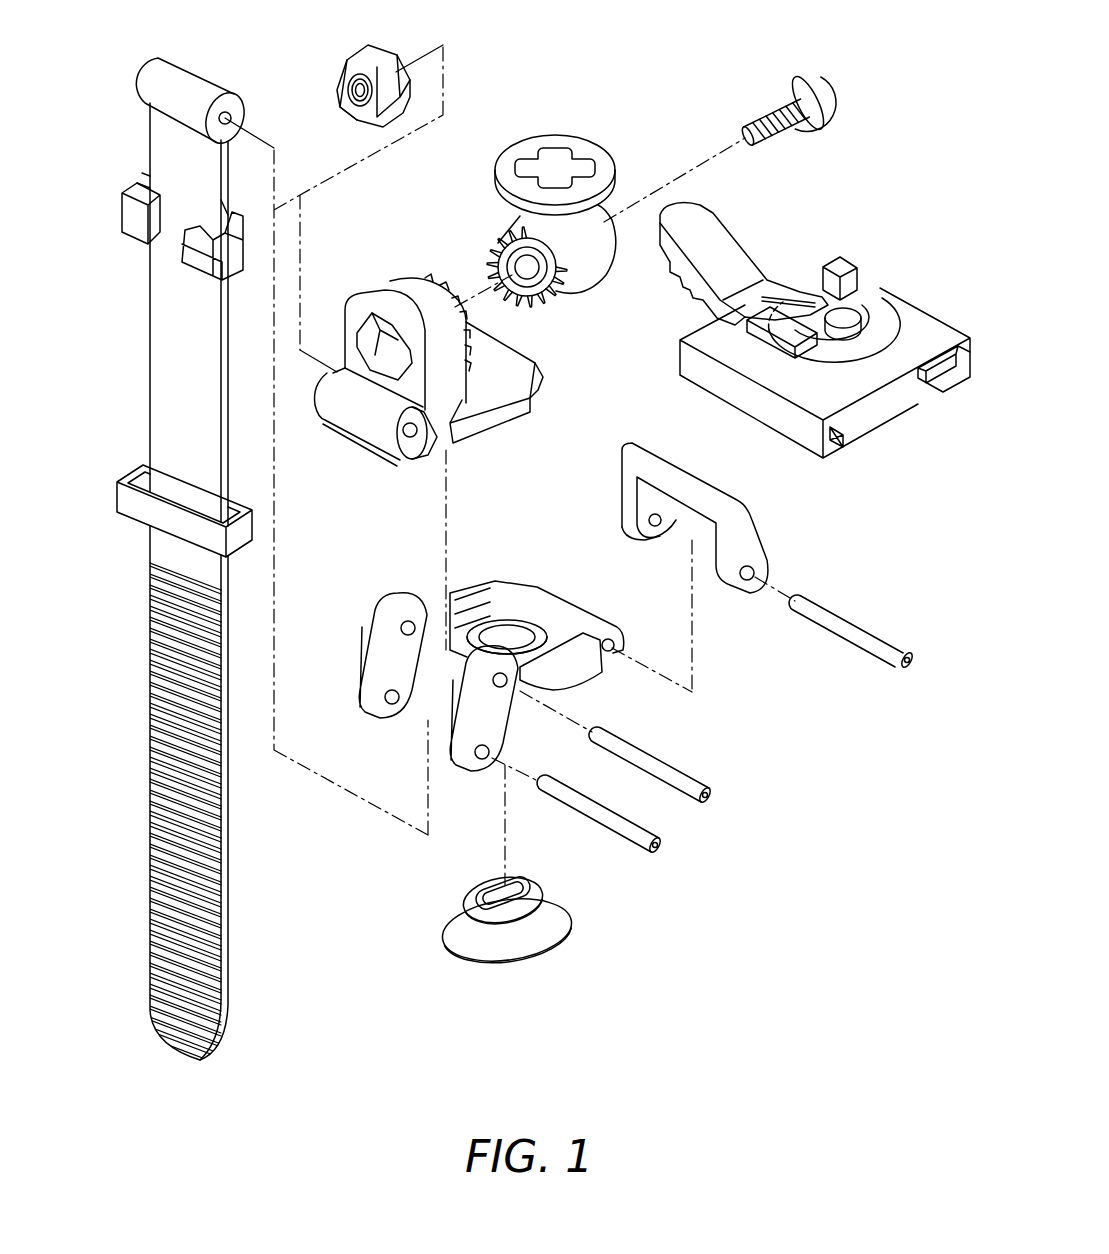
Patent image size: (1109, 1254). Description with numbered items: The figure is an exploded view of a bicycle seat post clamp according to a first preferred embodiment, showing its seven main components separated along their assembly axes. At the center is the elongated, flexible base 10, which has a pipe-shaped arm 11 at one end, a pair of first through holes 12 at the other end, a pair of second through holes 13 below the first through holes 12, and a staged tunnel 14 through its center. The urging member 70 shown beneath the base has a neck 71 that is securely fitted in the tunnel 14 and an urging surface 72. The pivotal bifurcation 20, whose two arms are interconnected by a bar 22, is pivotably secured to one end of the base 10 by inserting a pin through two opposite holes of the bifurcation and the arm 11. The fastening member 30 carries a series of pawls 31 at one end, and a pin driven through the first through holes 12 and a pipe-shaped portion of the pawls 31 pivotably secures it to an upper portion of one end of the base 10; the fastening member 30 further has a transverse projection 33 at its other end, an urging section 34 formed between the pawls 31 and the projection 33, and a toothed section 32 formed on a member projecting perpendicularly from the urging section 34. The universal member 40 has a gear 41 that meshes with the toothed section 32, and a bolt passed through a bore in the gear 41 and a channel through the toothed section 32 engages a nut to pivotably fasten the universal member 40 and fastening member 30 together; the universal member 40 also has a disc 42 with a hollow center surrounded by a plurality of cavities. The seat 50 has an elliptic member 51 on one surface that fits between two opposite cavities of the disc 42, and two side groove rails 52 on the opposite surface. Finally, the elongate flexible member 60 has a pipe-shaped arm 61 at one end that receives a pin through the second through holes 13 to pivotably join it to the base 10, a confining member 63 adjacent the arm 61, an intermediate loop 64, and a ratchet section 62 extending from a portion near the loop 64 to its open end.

The base 10 is at (511, 680).
The pipe-shaped arm 11 is at (614, 655).
The first through holes 12 is at (398, 628).
The second through holes 13 is at (380, 697).
The staged tunnel 14 is at (512, 632).
The pivotal bifurcation 20 is at (768, 556).
The bar 22 is at (690, 510).
The fastening member 30 is at (460, 342).
The pawls 31 is at (370, 455).
The toothed section 32 is at (432, 292).
The transverse projection 33 is at (545, 352).
The urging section 34 is at (480, 425).
The universal member 40 is at (546, 220).
The gear 41 is at (510, 228).
The disc 42 is at (585, 140).
The seat 50 is at (820, 380).
The elliptic member 51 is at (853, 318).
The side groove rails 52 is at (850, 450).
The flexible member 60 is at (167, 552).
The pipe-shaped arm 61 is at (205, 72).
The ratchet section 62 is at (145, 705).
The confining member 63 is at (120, 203).
The intermediate loop 64 is at (130, 523).
The urging member 70 is at (510, 950).
The neck 71 is at (462, 905).
The urging surface 72 is at (518, 960).